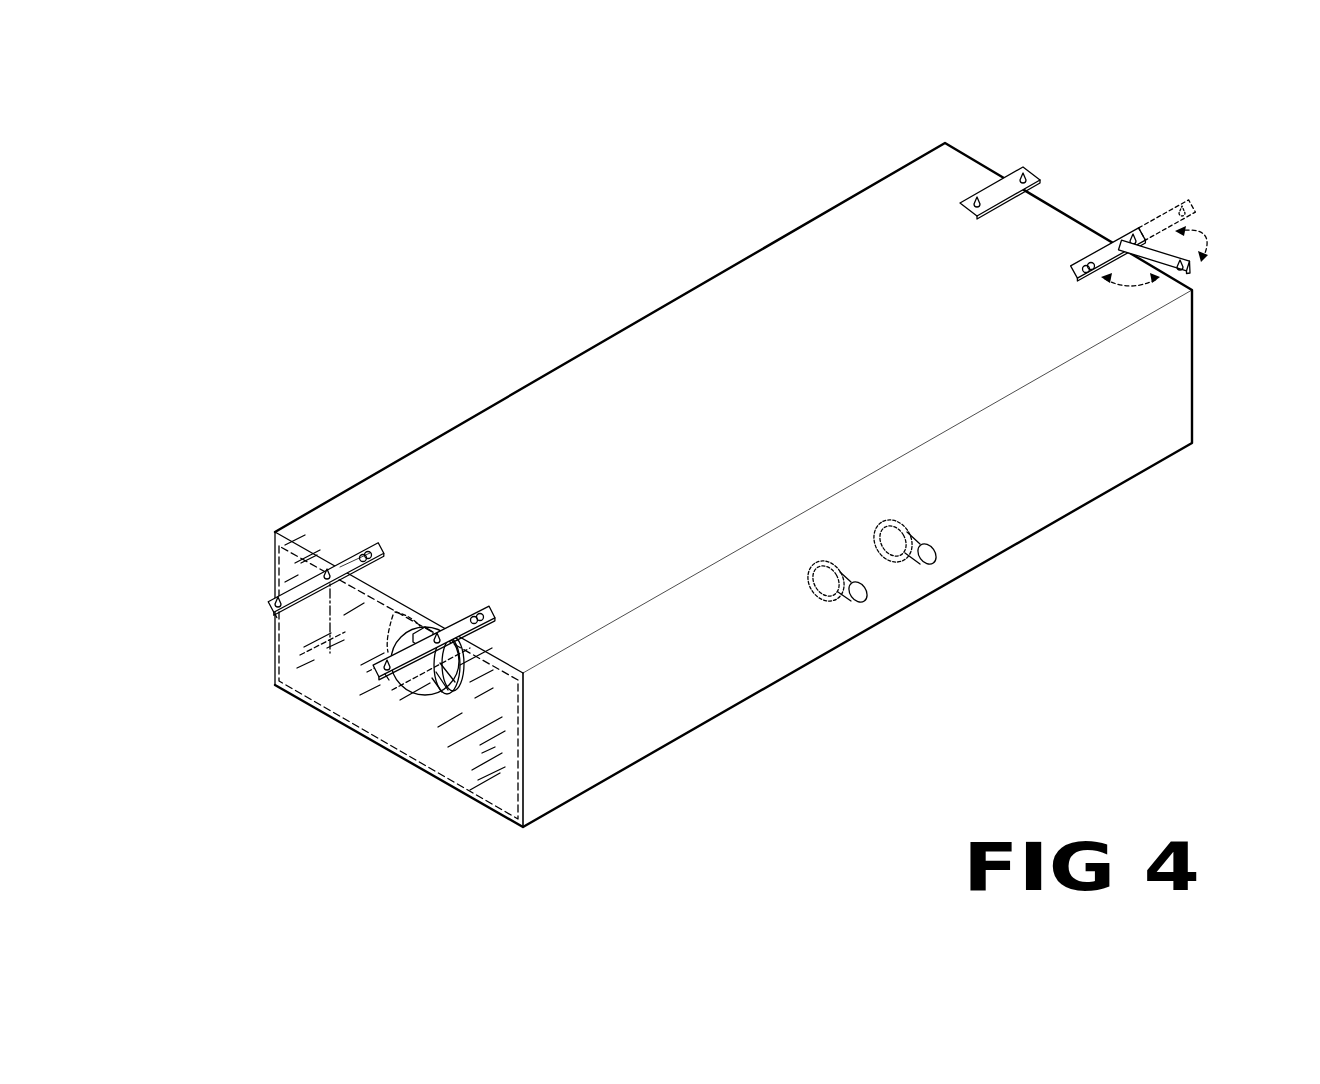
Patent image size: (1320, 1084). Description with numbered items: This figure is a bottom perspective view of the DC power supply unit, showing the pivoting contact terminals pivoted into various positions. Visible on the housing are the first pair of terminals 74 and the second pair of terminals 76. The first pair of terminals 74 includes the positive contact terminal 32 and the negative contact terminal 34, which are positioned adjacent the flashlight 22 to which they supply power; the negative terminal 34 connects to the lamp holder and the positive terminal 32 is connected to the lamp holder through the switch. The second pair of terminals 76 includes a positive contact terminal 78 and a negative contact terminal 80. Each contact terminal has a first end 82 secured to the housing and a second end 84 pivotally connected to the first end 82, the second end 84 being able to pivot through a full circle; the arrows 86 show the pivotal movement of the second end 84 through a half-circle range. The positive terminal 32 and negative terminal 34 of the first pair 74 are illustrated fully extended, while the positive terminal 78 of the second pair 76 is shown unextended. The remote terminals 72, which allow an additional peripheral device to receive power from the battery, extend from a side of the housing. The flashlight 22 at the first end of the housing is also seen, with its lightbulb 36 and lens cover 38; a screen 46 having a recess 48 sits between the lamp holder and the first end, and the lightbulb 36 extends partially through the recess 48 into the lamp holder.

The first flashlight 22 is at (432, 805).
The positive contact terminal 32 is at (266, 610).
The negative contact terminal 34 is at (388, 670).
The lightbulb 36 is at (427, 680).
The lens cover 38 is at (493, 780).
The screen 46 is at (503, 737).
The recess 48 is at (453, 657).
The remote terminals 72 is at (867, 600).
The first pair of terminals 74 is at (380, 552).
The second pair of terminals 76 is at (1072, 272).
The positive contact terminal 78 is at (1003, 180).
The negative contact terminal 80 is at (1143, 230).
The first end 82 is at (355, 563).
The second end 84 is at (297, 598).
The arrows 86 is at (1140, 285).